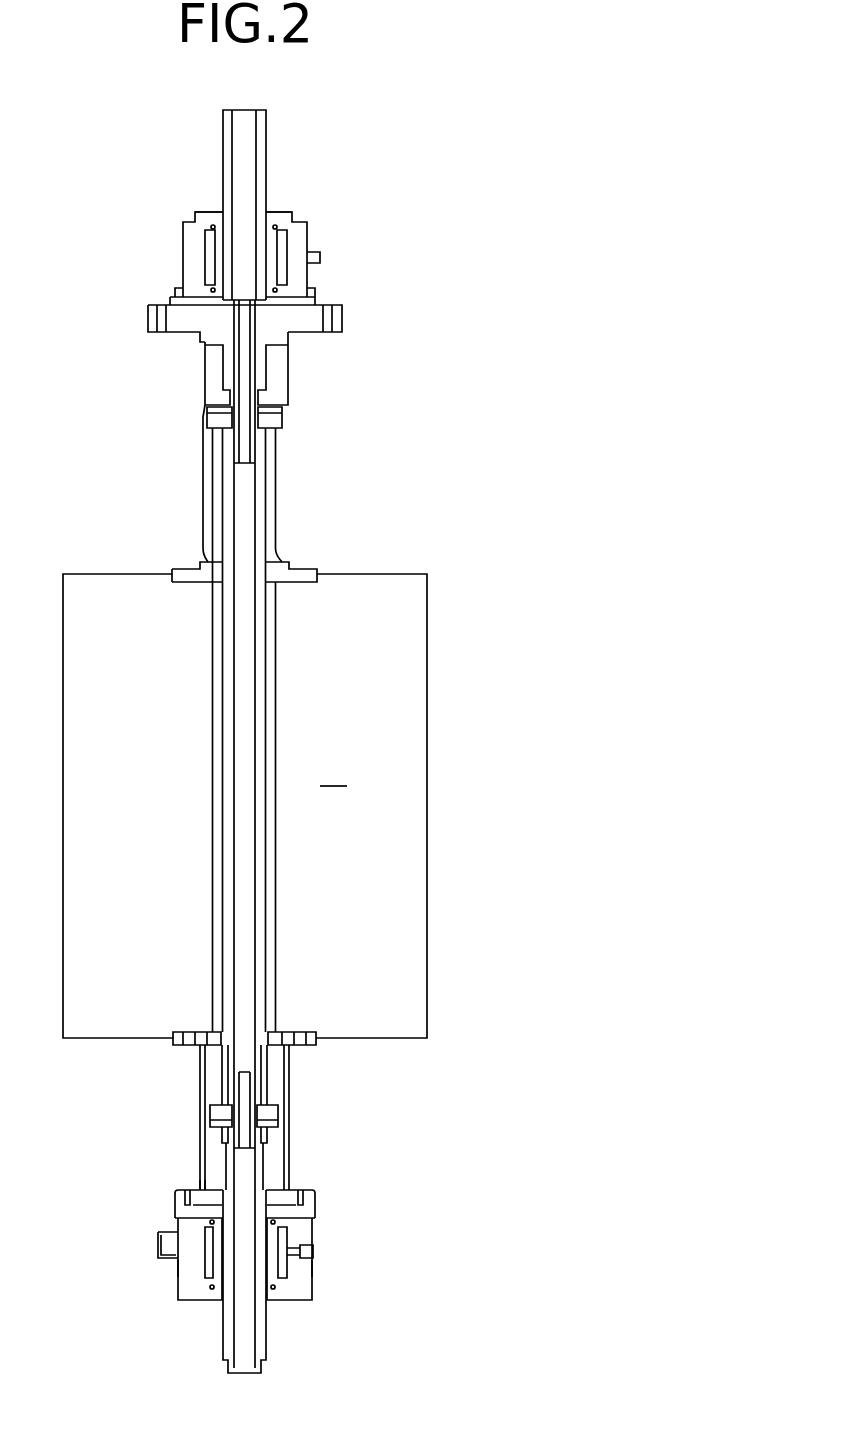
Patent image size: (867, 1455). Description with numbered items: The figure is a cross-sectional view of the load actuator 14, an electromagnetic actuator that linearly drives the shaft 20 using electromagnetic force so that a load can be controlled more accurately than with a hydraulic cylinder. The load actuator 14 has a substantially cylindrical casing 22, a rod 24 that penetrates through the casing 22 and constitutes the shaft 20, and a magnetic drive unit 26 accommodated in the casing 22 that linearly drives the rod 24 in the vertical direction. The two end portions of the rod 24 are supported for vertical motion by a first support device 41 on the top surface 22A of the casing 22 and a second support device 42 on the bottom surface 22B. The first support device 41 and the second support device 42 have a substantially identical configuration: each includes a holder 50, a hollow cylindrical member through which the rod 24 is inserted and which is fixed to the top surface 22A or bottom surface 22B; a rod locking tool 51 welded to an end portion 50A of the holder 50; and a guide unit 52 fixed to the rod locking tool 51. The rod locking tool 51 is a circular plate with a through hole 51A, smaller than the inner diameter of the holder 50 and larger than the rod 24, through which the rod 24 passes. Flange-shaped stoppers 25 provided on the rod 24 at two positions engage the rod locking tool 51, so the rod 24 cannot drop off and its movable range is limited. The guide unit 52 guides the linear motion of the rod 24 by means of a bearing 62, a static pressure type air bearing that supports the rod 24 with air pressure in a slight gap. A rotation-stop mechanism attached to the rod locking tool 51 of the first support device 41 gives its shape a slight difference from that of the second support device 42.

The load actuator 14 is at (428, 113).
The shaft 20 is at (308, 741).
The casing 22 is at (428, 636).
The top surface 22A is at (373, 571).
The bottom surface 22B is at (375, 1040).
The rod 24 is at (267, 163).
The stopper 25 is at (273, 425).
The magnetic drive unit 26 is at (336, 772).
The first support device 41 is at (360, 287).
The second support device 42 is at (360, 1210).
The holder 50 is at (205, 435).
The end portion 50A is at (200, 343).
The rod locking tool 51 is at (148, 316).
The through hole 51A is at (288, 372).
The guide unit 52 is at (183, 245).
The bearing 62 is at (290, 228).